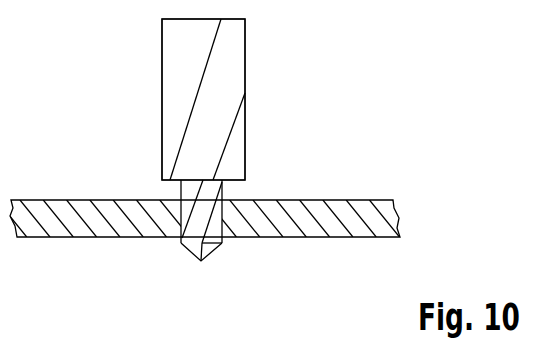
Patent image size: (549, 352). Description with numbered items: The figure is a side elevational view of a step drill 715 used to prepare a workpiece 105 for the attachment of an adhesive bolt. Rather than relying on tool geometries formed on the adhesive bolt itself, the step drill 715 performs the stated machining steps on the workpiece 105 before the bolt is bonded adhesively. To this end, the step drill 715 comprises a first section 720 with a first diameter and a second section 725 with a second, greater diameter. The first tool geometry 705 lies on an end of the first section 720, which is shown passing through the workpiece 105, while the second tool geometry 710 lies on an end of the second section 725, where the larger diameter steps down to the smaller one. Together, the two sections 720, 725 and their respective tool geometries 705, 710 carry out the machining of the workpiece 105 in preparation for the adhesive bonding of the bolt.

The workpiece 105 is at (395, 210).
The first tool geometry 705 is at (181, 258).
The second tool geometry 710 is at (238, 181).
The step drill 715 is at (252, 53).
The first section 720 is at (171, 190).
The second section 725 is at (123, 92).